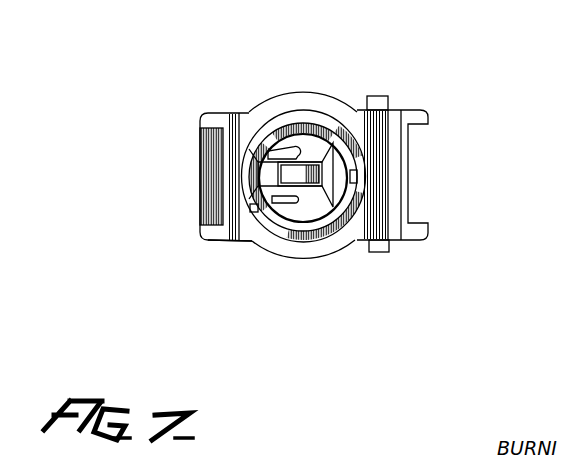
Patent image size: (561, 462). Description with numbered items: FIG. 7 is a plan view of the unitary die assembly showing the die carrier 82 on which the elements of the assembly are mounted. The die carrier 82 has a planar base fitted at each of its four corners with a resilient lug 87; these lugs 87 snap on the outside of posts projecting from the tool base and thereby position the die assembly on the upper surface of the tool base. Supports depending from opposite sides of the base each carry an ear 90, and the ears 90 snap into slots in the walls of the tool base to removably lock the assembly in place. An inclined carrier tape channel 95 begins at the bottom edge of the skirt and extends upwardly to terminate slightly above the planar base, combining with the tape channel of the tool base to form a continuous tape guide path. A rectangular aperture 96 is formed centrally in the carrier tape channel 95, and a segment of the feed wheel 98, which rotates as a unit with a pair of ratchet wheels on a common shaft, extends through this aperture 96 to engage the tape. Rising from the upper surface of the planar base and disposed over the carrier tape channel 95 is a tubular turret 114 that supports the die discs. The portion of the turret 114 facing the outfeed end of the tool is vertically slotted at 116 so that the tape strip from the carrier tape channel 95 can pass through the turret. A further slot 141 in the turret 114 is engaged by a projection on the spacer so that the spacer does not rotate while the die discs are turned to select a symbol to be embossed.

The die carrier 82 is at (342, 90).
The lug 87 is at (200, 113).
The ear 90 is at (382, 96).
The carrier tape channel 95 is at (267, 152).
The rectangular aperture 96 is at (315, 184).
The feed wheel 98 is at (288, 174).
The tubular turret 114 is at (305, 112).
The vertical slot 116 is at (252, 243).
The slot 141 is at (357, 176).